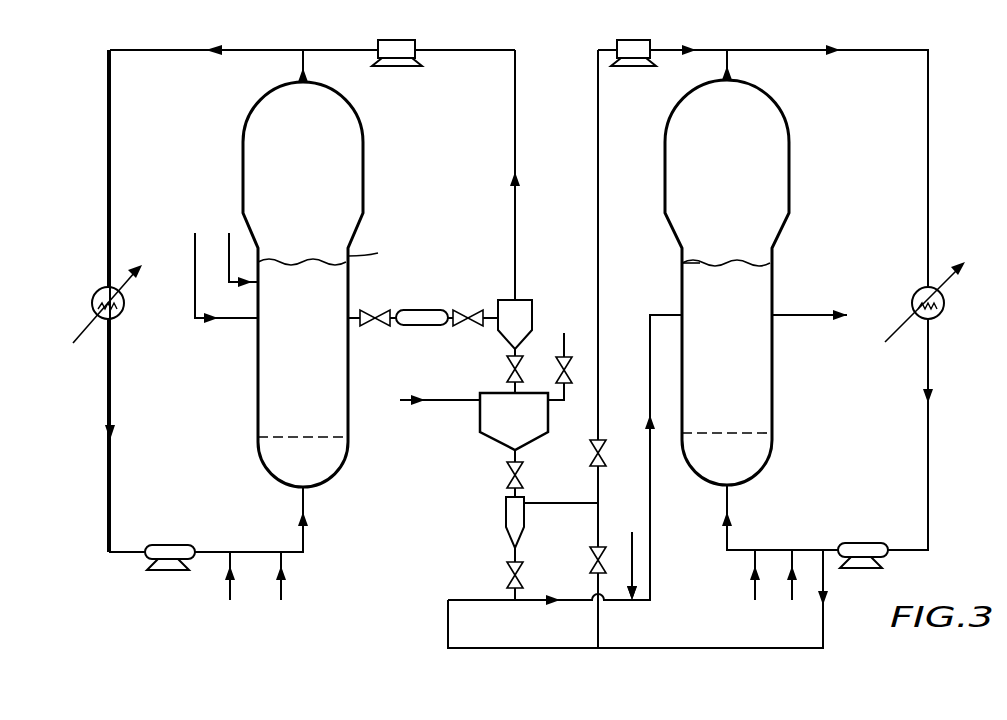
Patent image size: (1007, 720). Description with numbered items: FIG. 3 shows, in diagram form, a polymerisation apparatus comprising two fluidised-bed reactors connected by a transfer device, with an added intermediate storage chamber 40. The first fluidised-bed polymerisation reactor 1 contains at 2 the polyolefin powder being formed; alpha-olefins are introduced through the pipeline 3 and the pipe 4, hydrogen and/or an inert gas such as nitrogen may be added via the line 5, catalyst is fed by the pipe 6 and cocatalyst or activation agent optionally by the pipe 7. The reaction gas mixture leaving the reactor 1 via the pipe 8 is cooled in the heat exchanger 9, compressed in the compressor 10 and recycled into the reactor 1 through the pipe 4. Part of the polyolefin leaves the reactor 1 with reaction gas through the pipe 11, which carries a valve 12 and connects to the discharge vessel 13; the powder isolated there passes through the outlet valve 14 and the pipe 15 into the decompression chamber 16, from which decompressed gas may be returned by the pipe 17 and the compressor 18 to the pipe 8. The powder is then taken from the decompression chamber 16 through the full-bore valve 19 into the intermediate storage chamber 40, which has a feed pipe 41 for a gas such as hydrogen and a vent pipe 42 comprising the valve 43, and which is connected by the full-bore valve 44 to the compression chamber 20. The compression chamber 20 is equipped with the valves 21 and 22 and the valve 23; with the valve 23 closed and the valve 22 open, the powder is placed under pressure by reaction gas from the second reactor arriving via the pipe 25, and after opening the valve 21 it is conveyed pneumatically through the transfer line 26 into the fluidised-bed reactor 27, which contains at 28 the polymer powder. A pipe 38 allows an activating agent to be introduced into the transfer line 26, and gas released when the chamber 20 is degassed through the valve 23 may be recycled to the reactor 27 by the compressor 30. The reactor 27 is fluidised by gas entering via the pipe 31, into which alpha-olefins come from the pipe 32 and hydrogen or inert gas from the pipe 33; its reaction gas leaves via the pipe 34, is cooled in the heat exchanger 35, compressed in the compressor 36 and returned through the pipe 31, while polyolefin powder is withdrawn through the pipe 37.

The first fluidised-bed polymerisation reactor 1 is at (368, 252).
The polyolefin powder being formed 2 is at (312, 366).
The pipeline 3 is at (283, 595).
The pipe 4 is at (306, 497).
The line 5 is at (229, 593).
The pipe 6 is at (229, 262).
The pipe 7 is at (195, 286).
The pipe 8 is at (275, 50).
The heat exchanger 9 is at (92, 302).
The compressor 10 is at (167, 548).
The pipe 11 is at (353, 321).
The valve 12 is at (376, 309).
The discharge vessel 13 is at (425, 311).
The outlet valve 14 is at (467, 309).
The pipe 15 is at (490, 321).
The decompression chamber 16 is at (528, 314).
The pipe 17 is at (518, 167).
The compressor 18 is at (396, 48).
The full-bore valve 19 is at (506, 370).
The compression chamber 20 is at (506, 517).
The valve 21 is at (507, 578).
The valve 22 is at (590, 561).
The valve 23 is at (602, 454).
The pipe 25 is at (558, 506).
The transfer line 26 is at (652, 511).
The fluidised-bed reactor 27 is at (682, 262).
The polymer powder 28 is at (738, 366).
The compressor 30 is at (634, 48).
The pipe 31 is at (730, 502).
The pipe 32 is at (752, 590).
The pipe 33 is at (791, 598).
The pipe 34 is at (790, 50).
The heat exchanger 35 is at (945, 303).
The compressor 36 is at (862, 546).
The pipe 37 is at (812, 315).
The pipe 38 is at (630, 574).
The intermediate storage chamber 40 is at (498, 439).
The feed pipe 41 is at (450, 402).
The vent pipe 42 is at (562, 402).
The valve 43 is at (572, 364).
The full-bore valve 44 is at (521, 476).